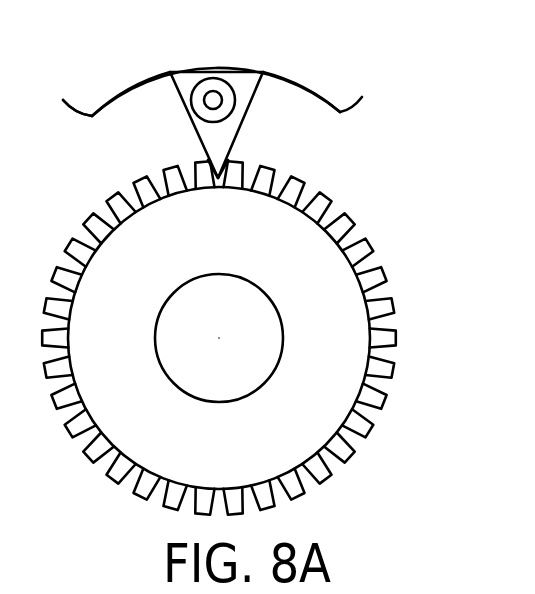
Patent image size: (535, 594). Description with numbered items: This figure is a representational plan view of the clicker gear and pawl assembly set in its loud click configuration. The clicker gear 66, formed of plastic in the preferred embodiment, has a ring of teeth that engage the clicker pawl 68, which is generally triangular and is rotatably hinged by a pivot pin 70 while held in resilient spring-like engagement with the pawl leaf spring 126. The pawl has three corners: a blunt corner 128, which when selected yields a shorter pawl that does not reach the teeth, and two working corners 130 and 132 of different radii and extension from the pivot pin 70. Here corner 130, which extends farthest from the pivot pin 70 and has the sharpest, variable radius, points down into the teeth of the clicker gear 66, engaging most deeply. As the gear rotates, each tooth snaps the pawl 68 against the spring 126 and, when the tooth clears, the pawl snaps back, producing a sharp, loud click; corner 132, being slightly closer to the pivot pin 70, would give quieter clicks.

The clicker gear 66 is at (348, 307).
The clicker pawl 68 is at (243, 88).
The pivot pin 70 is at (221, 100).
The pawl leaf spring 126 is at (331, 102).
The blunt corner 128 is at (171, 72).
The corner 130 is at (221, 158).
The corner 132 is at (277, 72).